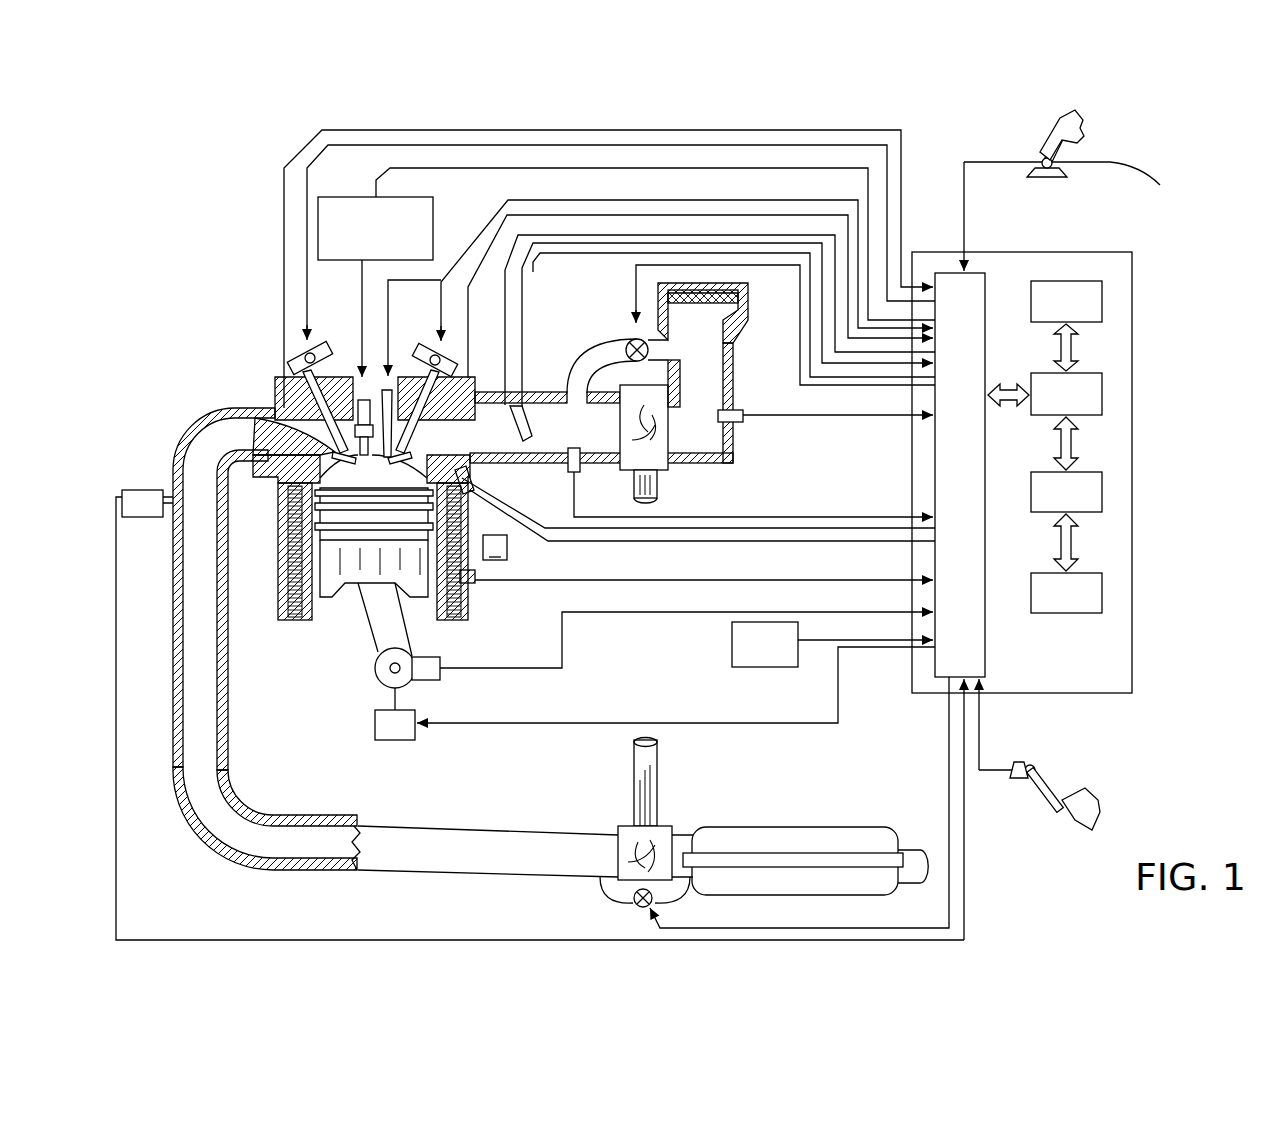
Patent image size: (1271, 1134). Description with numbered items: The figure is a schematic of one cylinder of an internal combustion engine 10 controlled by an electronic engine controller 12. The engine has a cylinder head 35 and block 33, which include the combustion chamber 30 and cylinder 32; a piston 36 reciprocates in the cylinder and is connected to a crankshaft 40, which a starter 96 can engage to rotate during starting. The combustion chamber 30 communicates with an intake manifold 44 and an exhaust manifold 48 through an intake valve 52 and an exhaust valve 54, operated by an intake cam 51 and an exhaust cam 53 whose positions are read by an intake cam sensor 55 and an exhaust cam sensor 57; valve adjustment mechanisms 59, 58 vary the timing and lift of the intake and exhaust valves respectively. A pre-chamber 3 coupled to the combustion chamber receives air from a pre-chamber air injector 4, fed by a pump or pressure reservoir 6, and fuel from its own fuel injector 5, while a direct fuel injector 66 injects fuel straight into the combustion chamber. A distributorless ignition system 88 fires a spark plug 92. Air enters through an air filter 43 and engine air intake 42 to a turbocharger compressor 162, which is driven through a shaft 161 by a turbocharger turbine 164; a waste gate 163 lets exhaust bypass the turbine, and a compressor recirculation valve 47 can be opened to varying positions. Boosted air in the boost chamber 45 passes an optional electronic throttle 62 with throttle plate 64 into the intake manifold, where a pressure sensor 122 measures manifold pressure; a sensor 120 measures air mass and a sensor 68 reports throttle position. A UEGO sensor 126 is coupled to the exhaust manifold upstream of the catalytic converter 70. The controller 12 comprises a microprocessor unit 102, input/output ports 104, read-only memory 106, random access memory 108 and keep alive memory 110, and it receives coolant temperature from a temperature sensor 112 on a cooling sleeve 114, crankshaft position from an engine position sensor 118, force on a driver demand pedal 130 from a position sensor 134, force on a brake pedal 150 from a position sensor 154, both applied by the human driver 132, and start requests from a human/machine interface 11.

The pre-chamber 3 is at (435, 462).
The pre-chamber air injector 4 is at (472, 492).
The fuel injector 5 is at (478, 460).
The pump or pressure reservoir 6 is at (495, 547).
The internal combustion engine 10 is at (215, 330).
The human/machine interface 11 is at (832, 644).
The electronic engine controller 12 is at (1132, 252).
The combustion chamber 30 is at (358, 477).
The cylinder 32 is at (318, 605).
The block 33 is at (275, 512).
The cylinder head 35 is at (273, 375).
The piston 36 is at (360, 590).
The crankshaft 40 is at (375, 680).
The engine air intake 42 is at (578, 302).
The air filter 43 is at (715, 303).
The intake manifold 44 is at (503, 440).
The boost chamber 45 is at (597, 440).
The compressor recirculation valve 47 is at (630, 340).
The exhaust manifold 48 is at (257, 447).
The intake cam 51 is at (438, 340).
The intake valve 52 is at (418, 445).
The exhaust cam 53 is at (320, 340).
The exhaust valve 54 is at (275, 415).
The intake cam sensor 55 is at (452, 365).
The exhaust cam sensor 57 is at (298, 360).
The valve adjustment mechanism 58 is at (318, 360).
The valve adjustment mechanism 59 is at (430, 360).
The electronic throttle 62 is at (530, 420).
The throttle plate 64 is at (528, 440).
The direct fuel injector 66 is at (390, 390).
The throttle position sensor 68 is at (470, 405).
The catalytic converter 70 is at (735, 827).
The distributorless ignition system 88 is at (330, 197).
The spark plug 92 is at (360, 400).
The starter 96 is at (400, 740).
The microprocessor unit 102 is at (1102, 392).
The input/output ports 104 is at (985, 283).
The read-only memory 106 is at (1102, 295).
The random access memory 108 is at (1102, 488).
The keep alive memory 110 is at (1102, 588).
The temperature sensor 112 is at (476, 580).
The cooling sleeve 114 is at (467, 618).
The engine position sensor 118 is at (438, 657).
The air mass sensor 120 is at (740, 410).
The pressure sensor 122 is at (568, 468).
The Universal Exhaust Gas Oxygen sensor 126 is at (118, 490).
The driver demand pedal 130 is at (1028, 148).
The human driver 132 is at (1085, 127).
The position sensor 134 is at (1176, 186).
The brake pedal 150 is at (1055, 810).
The position sensor 154 is at (1028, 766).
The shaft 161 is at (634, 484).
The turbocharger compressor 162 is at (655, 462).
The waste gate 163 is at (634, 904).
The turbocharger turbine 164 is at (622, 826).